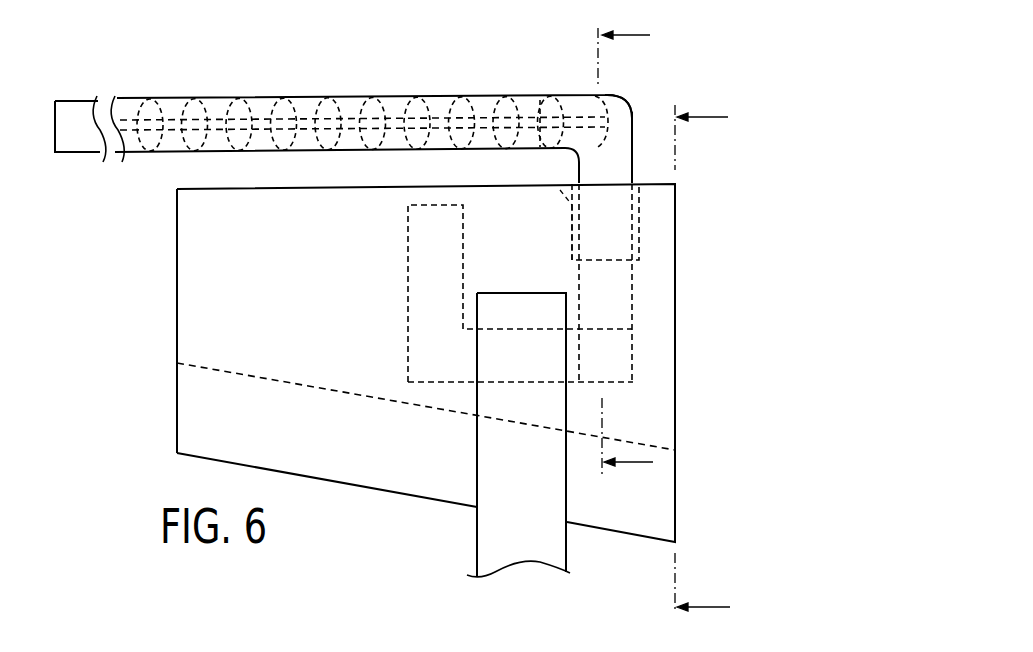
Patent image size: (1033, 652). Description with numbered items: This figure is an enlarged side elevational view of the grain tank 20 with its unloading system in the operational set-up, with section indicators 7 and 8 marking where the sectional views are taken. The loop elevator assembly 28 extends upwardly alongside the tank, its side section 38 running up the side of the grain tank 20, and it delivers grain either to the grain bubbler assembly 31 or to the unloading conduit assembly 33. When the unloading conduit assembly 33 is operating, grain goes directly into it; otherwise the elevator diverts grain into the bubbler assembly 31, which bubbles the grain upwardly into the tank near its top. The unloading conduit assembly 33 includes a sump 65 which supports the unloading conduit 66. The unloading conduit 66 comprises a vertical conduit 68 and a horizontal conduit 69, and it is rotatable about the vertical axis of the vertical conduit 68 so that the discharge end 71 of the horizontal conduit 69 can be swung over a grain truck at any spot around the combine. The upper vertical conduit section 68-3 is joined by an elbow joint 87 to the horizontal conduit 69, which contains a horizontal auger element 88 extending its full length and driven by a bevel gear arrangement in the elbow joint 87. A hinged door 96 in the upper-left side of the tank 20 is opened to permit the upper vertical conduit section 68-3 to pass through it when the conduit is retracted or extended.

The grain tank 20 is at (178, 268).
The loop elevator assembly 28 is at (473, 533).
The side section 38 is at (566, 543).
The grain bubbler assembly 31 is at (413, 277).
The unloading conduit assembly 33 is at (571, 232).
The sump 65 is at (617, 360).
The vertical conduit 68 is at (622, 234).
The upper vertical conduit section 68-3 is at (622, 125).
The unloading conduit 66 is at (434, 113).
The horizontal conduit 69 is at (358, 95).
The discharge end 71 is at (54, 141).
The elbow joint 87 is at (627, 97).
The horizontal auger element 88 is at (540, 92).
The hinged door 96 is at (568, 203).
The section line 7- 7 is at (713, 363).
The section line 8- 8 is at (616, 251).